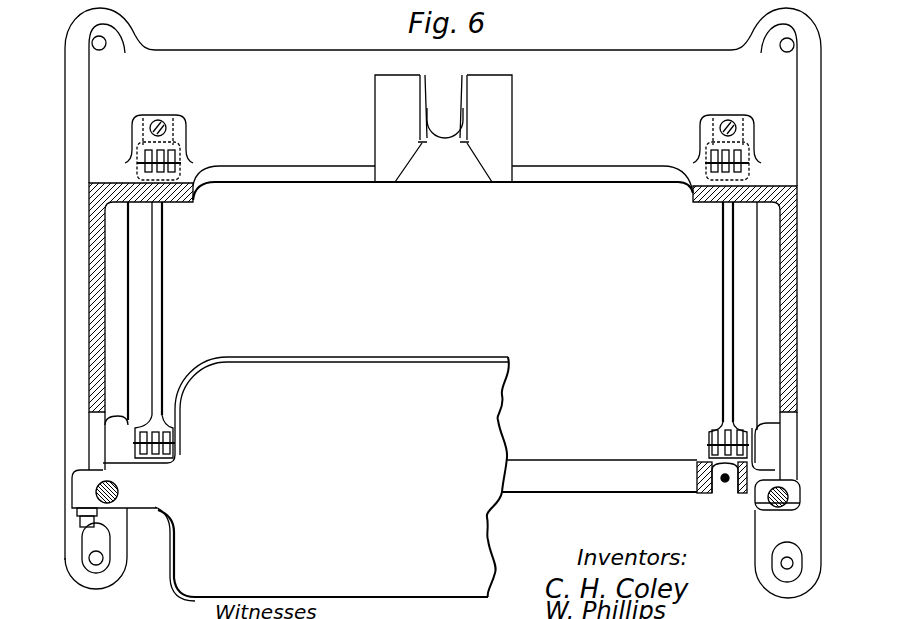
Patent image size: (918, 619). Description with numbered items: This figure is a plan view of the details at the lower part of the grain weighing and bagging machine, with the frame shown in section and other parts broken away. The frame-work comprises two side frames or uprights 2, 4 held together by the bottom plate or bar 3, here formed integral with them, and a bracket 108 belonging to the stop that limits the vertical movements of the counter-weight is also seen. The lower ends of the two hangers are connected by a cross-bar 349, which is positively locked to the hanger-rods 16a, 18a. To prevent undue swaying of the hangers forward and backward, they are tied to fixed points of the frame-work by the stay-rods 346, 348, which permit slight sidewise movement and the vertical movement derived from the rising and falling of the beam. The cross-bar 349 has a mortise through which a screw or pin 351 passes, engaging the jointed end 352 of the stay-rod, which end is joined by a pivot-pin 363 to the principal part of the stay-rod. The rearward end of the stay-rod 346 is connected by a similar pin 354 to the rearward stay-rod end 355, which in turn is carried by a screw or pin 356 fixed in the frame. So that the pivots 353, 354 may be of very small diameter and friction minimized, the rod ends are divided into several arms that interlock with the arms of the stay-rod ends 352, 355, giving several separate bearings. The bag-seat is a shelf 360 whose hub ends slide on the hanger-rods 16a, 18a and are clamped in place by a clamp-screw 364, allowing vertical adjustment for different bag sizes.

The bracket 108 is at (467, 82).
The bottom plate or bar 3 is at (323, 143).
The side frame or upright 4 is at (95, 282).
The side frame or upright 2 is at (788, 255).
The stay-rod 348 is at (162, 300).
The stay-rod 346 is at (723, 329).
The cross-bar 349 is at (584, 458).
The pivot 353 is at (707, 443).
The screw or pin 351 is at (722, 486).
The jointed end of the stay-rod 352 is at (735, 467).
The hanger-rod 16a is at (788, 497).
The hanger-rod 18a is at (98, 487).
The pivot-pin 363 is at (92, 496).
The clamp-screw 364 is at (80, 522).
The rearward stay-rod end 355 is at (737, 143).
The screw or pin 356 is at (724, 122).
The pin 354 is at (710, 163).
The shelf 360 is at (480, 502).